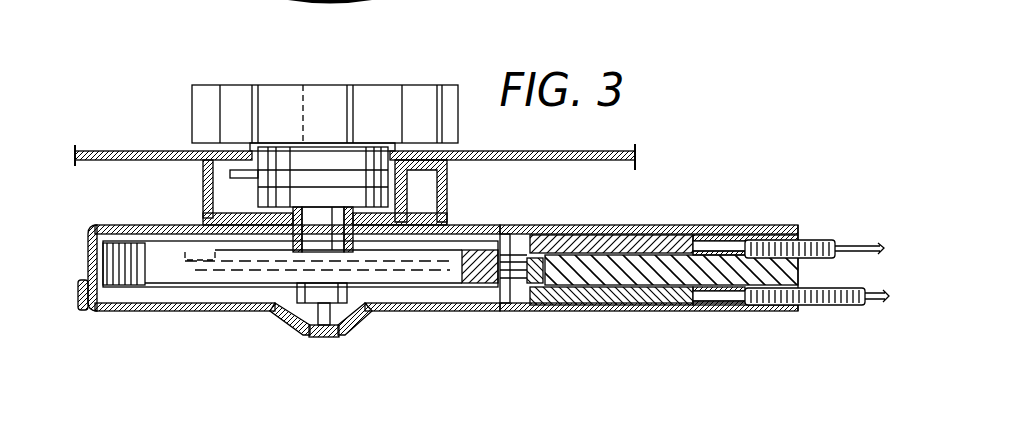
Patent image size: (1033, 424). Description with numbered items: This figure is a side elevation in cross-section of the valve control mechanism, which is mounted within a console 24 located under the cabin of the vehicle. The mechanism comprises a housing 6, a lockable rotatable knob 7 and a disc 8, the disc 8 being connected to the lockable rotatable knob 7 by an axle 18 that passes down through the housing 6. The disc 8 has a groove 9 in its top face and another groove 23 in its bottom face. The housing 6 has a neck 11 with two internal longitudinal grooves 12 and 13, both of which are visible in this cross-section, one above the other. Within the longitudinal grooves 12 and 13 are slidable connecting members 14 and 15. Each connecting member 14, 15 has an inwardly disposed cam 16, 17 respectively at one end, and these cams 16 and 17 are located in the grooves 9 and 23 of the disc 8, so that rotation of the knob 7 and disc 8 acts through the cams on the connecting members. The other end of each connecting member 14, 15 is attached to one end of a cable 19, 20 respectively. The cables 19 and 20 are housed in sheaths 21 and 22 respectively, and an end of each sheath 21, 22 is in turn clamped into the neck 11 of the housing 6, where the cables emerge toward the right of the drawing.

The housing 6 is at (93, 222).
The lockable rotatable knob 7 is at (205, 97).
The disc 8 is at (148, 258).
The groove 9 is at (197, 255).
The neck 11 is at (698, 232).
The longitudinal groove 12 is at (615, 238).
The longitudinal groove 13 is at (588, 306).
The connecting member 14 is at (573, 257).
The connecting member 15 is at (670, 306).
The cam 16 is at (510, 237).
The cam 17 is at (505, 305).
The axle 18 is at (318, 228).
The cable 19 is at (860, 240).
The cable 20 is at (872, 305).
The sheath 21 is at (818, 240).
The sheath 22 is at (820, 307).
The groove 23 is at (220, 288).
The console 24 is at (135, 150).